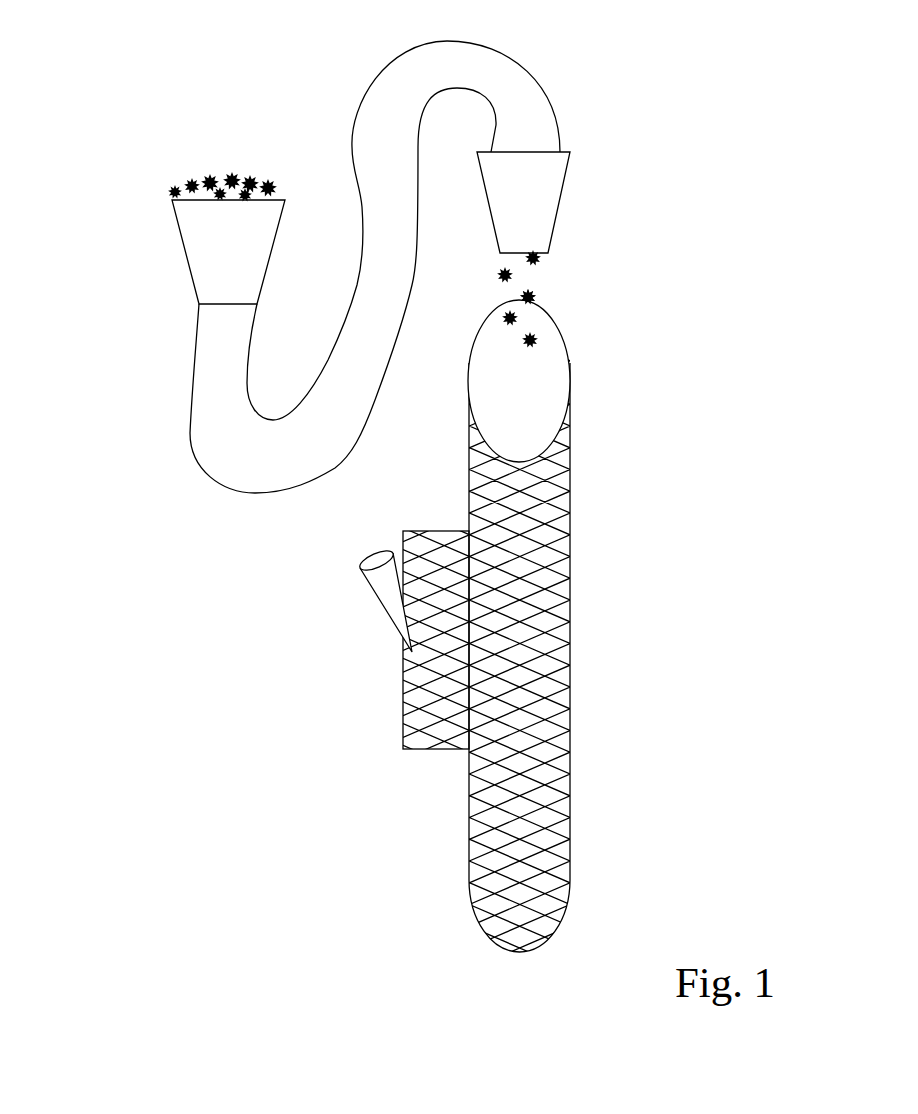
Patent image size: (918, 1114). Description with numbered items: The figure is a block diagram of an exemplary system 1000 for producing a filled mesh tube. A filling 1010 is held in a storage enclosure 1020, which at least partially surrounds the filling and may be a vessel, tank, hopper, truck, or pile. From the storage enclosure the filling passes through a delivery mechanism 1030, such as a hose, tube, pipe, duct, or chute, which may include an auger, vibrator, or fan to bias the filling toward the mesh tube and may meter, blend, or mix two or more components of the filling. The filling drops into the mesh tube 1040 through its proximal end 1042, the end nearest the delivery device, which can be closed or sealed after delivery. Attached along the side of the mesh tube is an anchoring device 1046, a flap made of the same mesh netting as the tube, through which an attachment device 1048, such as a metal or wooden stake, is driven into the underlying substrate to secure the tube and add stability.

The system 1000 is at (174, 82).
The filling 1010 is at (174, 175).
The storage enclosure 1020 is at (149, 272).
The delivery mechanism 1030 is at (554, 75).
The mesh tube 1040 is at (596, 551).
The proximal end 1042 is at (582, 336).
The anchoring device 1046 is at (378, 716).
The attachment device 1048 is at (361, 618).